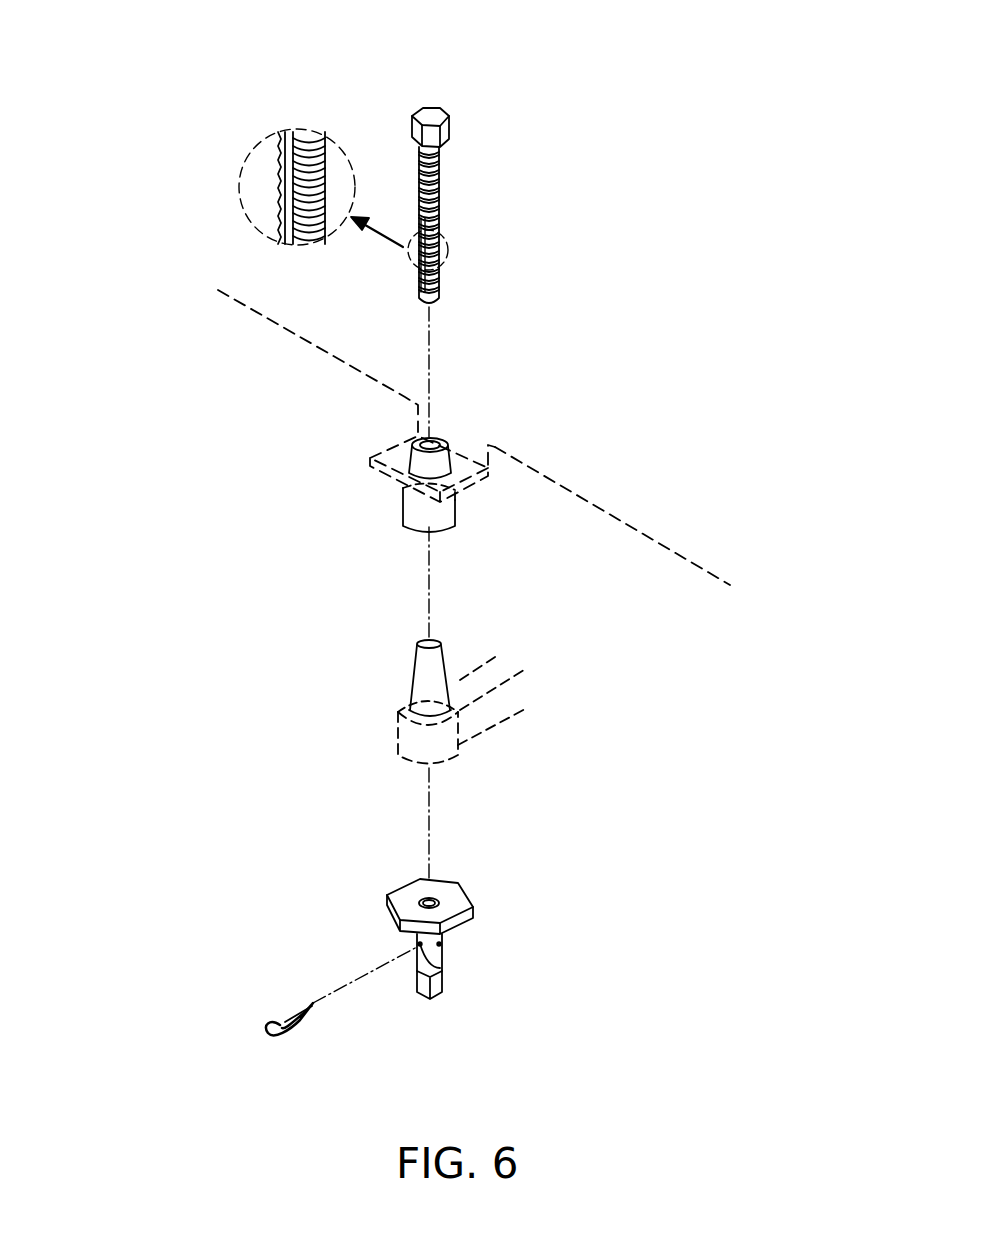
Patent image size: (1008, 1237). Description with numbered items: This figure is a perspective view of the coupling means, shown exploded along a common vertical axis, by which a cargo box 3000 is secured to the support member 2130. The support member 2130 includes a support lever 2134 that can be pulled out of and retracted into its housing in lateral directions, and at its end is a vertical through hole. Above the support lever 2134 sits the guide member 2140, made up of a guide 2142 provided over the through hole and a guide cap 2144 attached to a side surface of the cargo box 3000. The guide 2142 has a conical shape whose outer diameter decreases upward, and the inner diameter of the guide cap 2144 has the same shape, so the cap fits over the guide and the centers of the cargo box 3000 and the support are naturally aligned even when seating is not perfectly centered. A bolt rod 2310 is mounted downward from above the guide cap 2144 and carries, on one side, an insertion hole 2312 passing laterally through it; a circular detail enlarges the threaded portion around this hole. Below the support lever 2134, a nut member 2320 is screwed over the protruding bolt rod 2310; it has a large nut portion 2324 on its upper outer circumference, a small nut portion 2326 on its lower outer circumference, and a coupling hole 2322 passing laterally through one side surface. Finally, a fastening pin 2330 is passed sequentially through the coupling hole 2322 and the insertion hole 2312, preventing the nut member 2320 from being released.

The bolt rod 2310 is at (448, 114).
The insertion hole 2312 is at (292, 190).
The cargo box 3000 is at (608, 513).
The guide member 2140 is at (138, 547).
The guide cap 2144 is at (405, 507).
The guide 2142 is at (412, 667).
The support lever 2134 is at (498, 725).
The support member 2130 is at (722, 752).
The nut member 2320 is at (409, 969).
The large nut portion 2324 is at (388, 908).
The coupling hole 2322 is at (440, 969).
The small nut portion 2326 is at (448, 987).
The fastening pin 2330 is at (265, 1022).